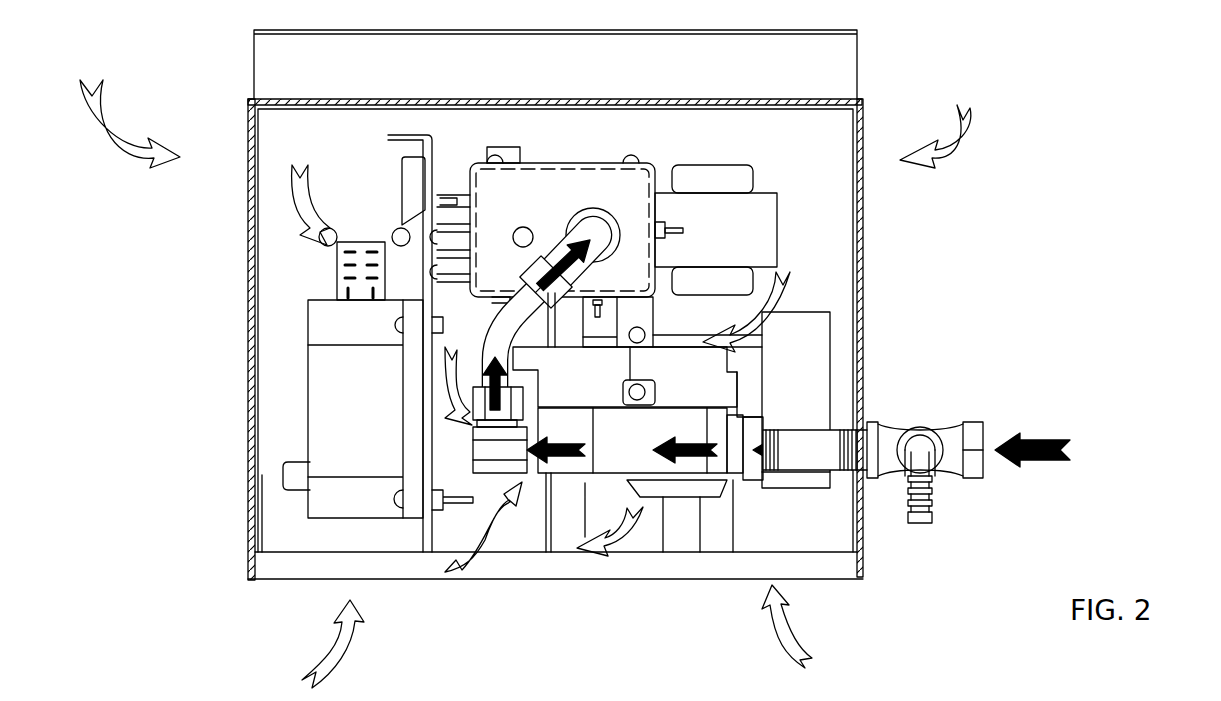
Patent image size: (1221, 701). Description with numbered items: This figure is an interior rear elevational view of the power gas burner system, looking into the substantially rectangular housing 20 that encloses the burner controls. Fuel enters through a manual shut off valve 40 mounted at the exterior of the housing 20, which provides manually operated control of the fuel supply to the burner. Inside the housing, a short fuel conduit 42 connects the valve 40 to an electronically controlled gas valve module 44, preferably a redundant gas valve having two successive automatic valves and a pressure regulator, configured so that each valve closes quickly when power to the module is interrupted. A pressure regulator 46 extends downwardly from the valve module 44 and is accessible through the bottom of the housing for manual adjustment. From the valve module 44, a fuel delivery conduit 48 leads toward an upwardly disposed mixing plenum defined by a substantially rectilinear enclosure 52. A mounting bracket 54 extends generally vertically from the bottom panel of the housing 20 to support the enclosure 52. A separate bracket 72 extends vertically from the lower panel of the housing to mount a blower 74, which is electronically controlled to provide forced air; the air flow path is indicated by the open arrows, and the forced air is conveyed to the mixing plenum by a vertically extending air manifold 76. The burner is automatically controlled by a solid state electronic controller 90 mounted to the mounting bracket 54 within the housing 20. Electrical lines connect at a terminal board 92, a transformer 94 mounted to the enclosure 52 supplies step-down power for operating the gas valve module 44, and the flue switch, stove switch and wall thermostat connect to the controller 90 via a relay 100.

The housing 20 is at (863, 110).
The manual shut off valve 40 is at (950, 430).
The fuel conduit 42 is at (822, 432).
The gas valve module 44 is at (573, 478).
The pressure regulator 46 is at (688, 537).
The fuel delivery conduit 48 is at (505, 328).
The enclosure 52 is at (593, 178).
The mounting bracket 54 is at (432, 527).
The bracket 72 is at (735, 517).
The blower 74 is at (815, 366).
The air manifold 76 is at (533, 527).
The electronic controller 90 is at (362, 402).
The terminal board 92 is at (402, 170).
The transformer 94 is at (765, 226).
The relay 100 is at (340, 266).